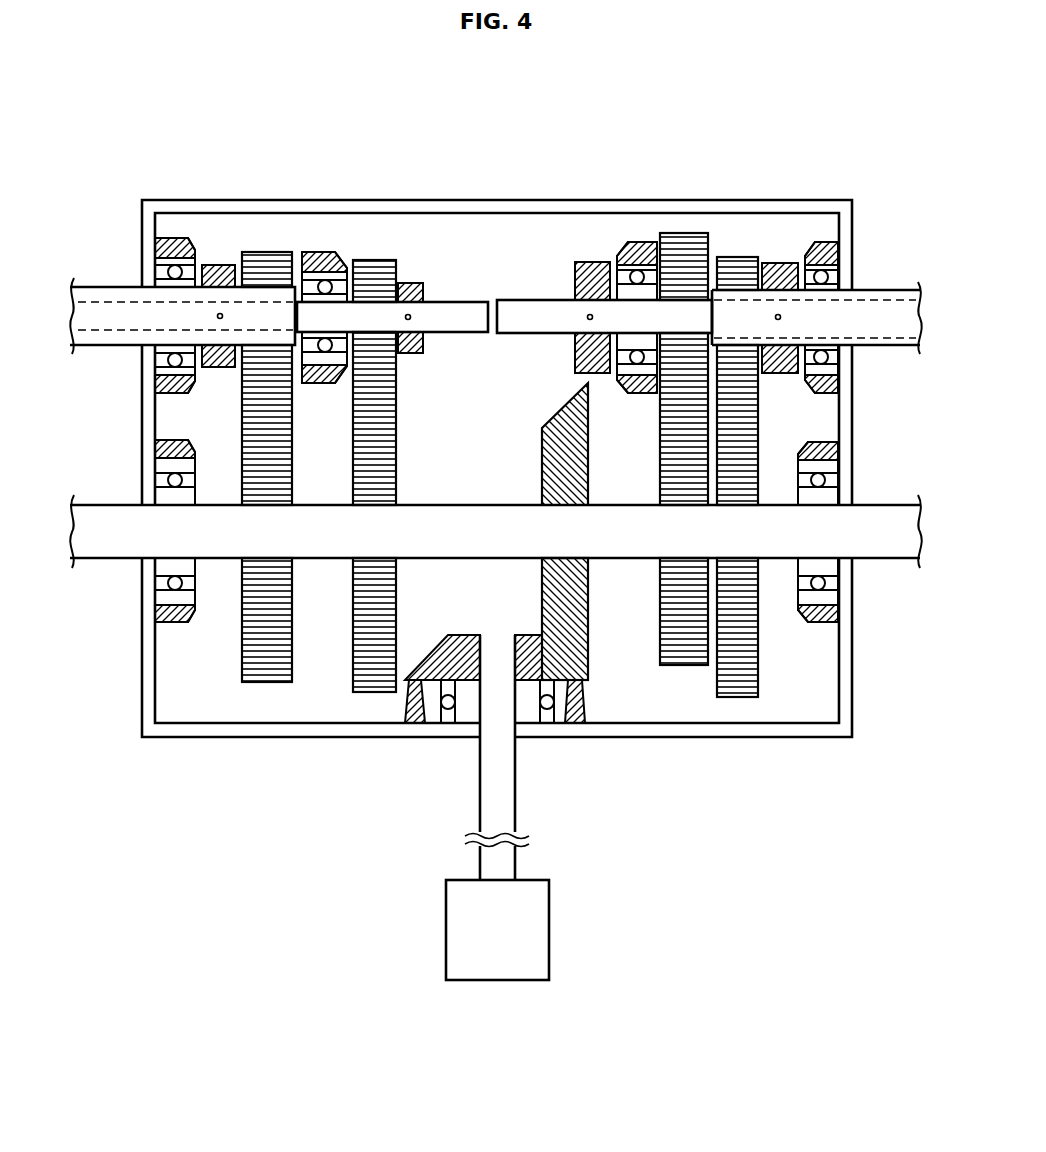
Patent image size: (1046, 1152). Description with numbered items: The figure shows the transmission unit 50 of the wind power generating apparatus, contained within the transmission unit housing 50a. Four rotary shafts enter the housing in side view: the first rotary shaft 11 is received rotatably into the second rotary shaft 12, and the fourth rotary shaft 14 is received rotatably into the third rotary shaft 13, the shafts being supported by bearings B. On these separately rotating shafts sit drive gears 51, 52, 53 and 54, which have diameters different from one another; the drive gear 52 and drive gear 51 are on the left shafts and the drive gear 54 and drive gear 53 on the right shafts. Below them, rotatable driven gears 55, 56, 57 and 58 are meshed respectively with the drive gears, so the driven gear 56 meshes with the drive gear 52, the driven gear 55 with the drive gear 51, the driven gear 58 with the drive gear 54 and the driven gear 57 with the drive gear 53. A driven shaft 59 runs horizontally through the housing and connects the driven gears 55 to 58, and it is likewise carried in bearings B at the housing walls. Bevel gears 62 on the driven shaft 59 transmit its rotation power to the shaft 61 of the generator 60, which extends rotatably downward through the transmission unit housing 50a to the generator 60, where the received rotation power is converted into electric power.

The transmission unit 50 is at (868, 173).
The transmission unit housing 50a is at (142, 737).
The second rotary shaft 12 is at (102, 287).
The first rotary shaft 11 is at (457, 300).
The fourth rotary shaft 14 is at (540, 298).
The third rotary shaft 13 is at (890, 290).
The driven shaft 59 is at (882, 505).
The drive gear 52 is at (268, 252).
The drive gear 51 is at (376, 260).
The drive gear 54 is at (686, 233).
The drive gear 53 is at (740, 257).
The driven gear 56 is at (265, 682).
The driven gear 55 is at (377, 692).
The driven gear 58 is at (683, 665).
The driven gear 57 is at (738, 697).
The bevel gears 62 is at (590, 640).
The shaft 61 is at (478, 777).
The generator 60 is at (549, 938).
The bearings B is at (157, 620).